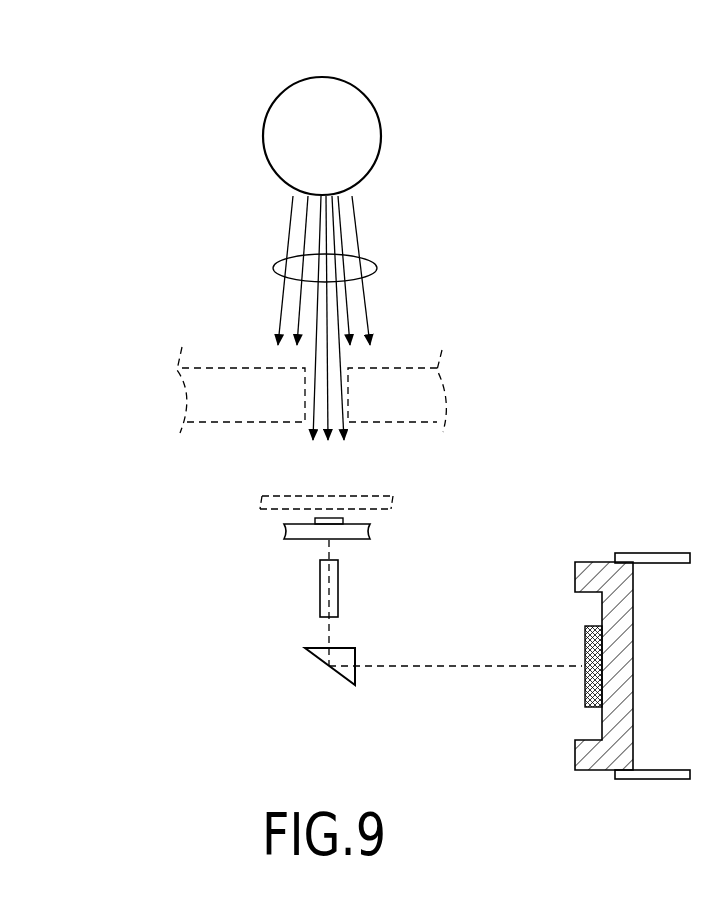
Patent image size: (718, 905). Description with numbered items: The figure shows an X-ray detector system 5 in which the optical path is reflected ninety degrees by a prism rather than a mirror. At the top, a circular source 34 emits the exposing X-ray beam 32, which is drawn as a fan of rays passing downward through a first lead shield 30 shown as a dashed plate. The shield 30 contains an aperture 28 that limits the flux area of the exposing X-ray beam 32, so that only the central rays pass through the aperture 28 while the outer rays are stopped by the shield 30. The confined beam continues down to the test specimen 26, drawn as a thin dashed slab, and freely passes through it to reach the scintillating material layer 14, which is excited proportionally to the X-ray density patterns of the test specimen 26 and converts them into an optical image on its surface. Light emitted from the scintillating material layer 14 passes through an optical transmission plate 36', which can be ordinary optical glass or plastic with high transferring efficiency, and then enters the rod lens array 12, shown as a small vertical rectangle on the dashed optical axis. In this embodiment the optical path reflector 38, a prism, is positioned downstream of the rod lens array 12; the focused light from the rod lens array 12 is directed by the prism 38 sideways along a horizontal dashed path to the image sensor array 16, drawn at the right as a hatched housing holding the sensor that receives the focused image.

The X-ray detector system 5 is at (188, 101).
The light source 34 is at (372, 105).
The exposing X-ray beam 32 is at (377, 267).
The first lead shield 30 is at (228, 367).
The aperture 28 is at (345, 422).
The test specimen 26 is at (280, 495).
The scintillating material layer 14 is at (315, 522).
The optical transmission plate 36' is at (254, 569).
The rod lens array 12 is at (339, 585).
The optical path reflector 38 is at (343, 680).
The image sensor array 16 is at (585, 655).